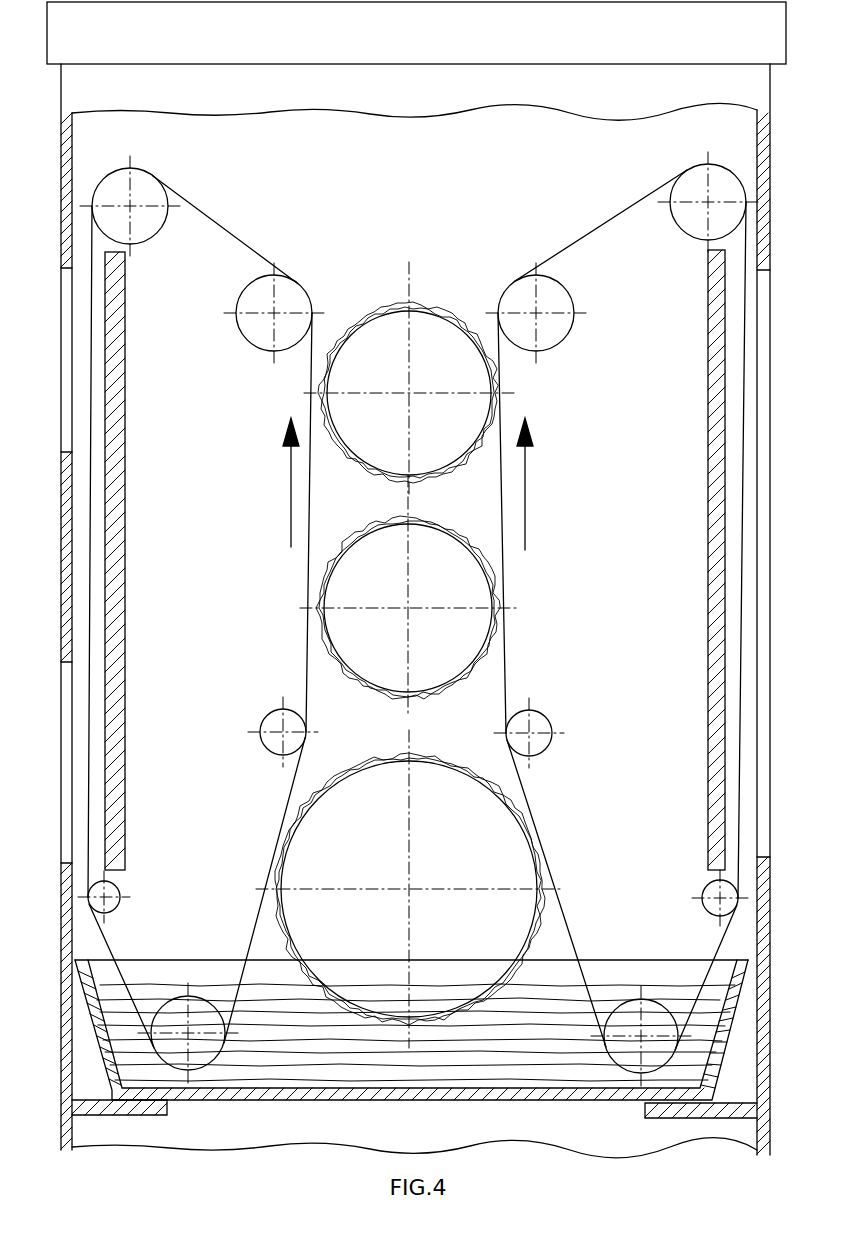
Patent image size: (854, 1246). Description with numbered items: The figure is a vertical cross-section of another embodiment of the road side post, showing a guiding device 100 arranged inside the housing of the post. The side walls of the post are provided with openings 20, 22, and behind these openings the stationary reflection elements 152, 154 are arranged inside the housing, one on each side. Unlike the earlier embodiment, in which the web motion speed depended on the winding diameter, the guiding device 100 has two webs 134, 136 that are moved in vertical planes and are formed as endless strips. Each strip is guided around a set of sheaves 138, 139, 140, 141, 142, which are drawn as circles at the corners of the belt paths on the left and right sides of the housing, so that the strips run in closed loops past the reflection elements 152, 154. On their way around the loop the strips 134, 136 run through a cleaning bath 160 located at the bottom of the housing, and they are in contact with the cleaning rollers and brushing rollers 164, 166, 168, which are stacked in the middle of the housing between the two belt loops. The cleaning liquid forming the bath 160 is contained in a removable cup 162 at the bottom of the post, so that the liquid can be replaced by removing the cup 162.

The opening 20 is at (759, 498).
The opening 22 is at (62, 405).
The guiding device 100 is at (421, 196).
The web 134 is at (214, 219).
The web 136 is at (587, 236).
The sheave 138 is at (157, 234).
The sheave 139 is at (258, 340).
The sheave 140 is at (119, 892).
The sheave 141 is at (176, 1005).
The sheave 142 is at (274, 754).
The stationary reflection element 152 is at (122, 551).
The stationary reflection element 154 is at (718, 550).
The cleaning bath 160 is at (297, 1043).
The removable cup 162 is at (505, 1096).
The cleaning roller / brushing roller 164 is at (378, 836).
The cleaning roller / brushing roller 166 is at (393, 578).
The cleaning roller / brushing roller 168 is at (394, 363).